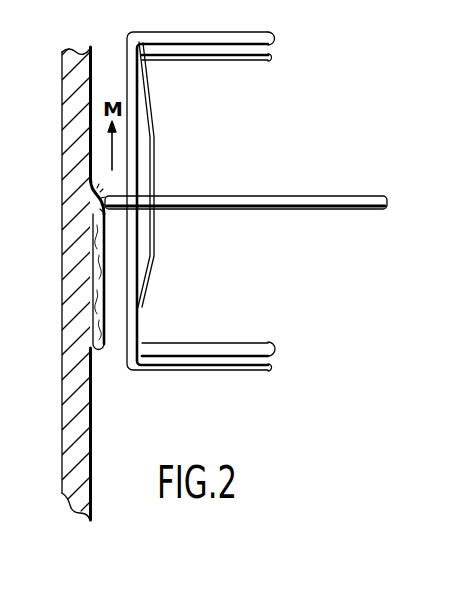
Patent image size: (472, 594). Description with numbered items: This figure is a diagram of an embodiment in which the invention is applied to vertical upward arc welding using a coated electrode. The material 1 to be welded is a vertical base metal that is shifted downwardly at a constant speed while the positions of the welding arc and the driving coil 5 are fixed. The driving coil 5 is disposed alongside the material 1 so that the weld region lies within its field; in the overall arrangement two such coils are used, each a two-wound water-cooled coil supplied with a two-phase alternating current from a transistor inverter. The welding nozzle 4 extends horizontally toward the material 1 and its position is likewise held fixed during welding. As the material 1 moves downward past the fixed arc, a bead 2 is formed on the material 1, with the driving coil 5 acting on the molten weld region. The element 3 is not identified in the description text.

The material to be welded 1 is at (71, 348).
The bead 2 is at (94, 303).
The adhesive bead 3 is at (103, 247).
The welding nozzle 4 is at (256, 196).
The driving coil 5 is at (157, 150).